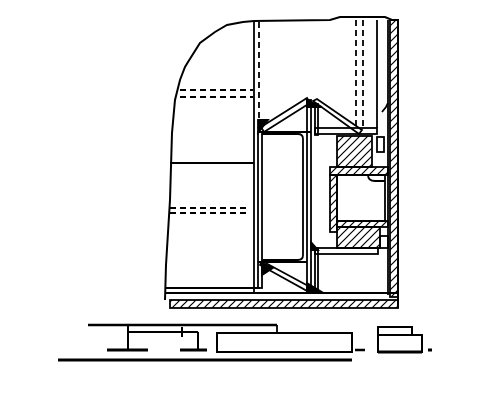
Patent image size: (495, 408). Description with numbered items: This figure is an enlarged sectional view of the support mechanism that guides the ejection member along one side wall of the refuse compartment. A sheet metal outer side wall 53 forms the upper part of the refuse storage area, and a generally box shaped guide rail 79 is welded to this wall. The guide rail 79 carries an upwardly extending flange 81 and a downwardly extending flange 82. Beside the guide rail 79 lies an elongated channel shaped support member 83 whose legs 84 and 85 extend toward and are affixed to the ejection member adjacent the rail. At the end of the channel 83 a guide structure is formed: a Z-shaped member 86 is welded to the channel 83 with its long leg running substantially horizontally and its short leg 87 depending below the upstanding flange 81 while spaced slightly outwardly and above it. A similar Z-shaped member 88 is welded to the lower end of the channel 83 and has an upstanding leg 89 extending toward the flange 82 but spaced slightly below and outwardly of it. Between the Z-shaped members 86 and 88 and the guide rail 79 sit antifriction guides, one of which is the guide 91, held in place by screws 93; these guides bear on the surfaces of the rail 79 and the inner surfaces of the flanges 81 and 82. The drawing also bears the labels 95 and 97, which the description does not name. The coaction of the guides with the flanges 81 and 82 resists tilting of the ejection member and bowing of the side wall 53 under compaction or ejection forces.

The sheet metal outer side wall 53 is at (402, 117).
The guide rail 79 is at (392, 180).
The upwardly extending flange 81 is at (330, 158).
The downwardly extending flange 82 is at (333, 232).
The channel shaped support member 83 is at (300, 184).
The leg of channel shaped member 84 is at (276, 143).
The leg of channel shaped member 85 is at (282, 252).
The Z-shaped member 86 is at (333, 132).
The short leg 87 is at (408, 130).
The Z-shaped member 88 is at (326, 256).
The upstanding leg 89 is at (390, 249).
The antifriction guide 91 is at (347, 227).
The screw 93 is at (410, 85).
The lower plate 95 is at (402, 258).
The bracket side wall 97 is at (262, 151).